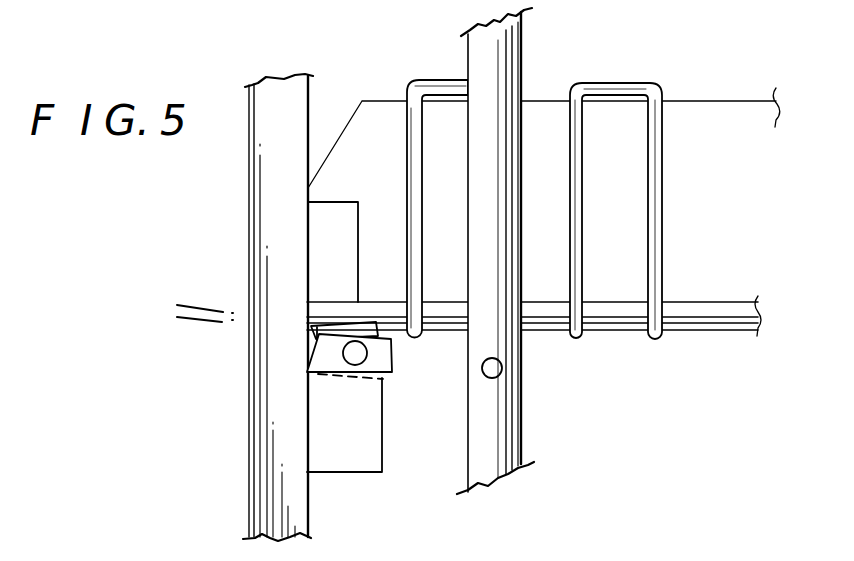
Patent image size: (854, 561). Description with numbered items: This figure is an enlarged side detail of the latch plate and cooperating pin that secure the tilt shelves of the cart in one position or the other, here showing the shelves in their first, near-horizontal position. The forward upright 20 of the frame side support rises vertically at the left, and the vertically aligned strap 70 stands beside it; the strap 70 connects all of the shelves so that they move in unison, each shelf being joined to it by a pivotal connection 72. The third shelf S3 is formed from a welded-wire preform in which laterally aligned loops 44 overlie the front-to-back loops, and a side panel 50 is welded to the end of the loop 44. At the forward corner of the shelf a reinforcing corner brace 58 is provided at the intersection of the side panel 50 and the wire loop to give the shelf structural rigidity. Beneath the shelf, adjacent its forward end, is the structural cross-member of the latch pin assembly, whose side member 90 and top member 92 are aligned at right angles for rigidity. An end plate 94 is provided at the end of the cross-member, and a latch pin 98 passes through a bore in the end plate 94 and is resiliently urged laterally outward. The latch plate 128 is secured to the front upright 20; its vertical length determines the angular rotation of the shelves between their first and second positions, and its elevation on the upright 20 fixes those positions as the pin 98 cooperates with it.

The forward upright 20 is at (271, 192).
The laterally aligned loop 44 is at (452, 82).
The side panel 50 is at (730, 230).
The reinforcing corner brace 58 is at (348, 206).
The vertically aligned strap 70 is at (505, 71).
The pivotal connection 72 is at (503, 375).
The side member 90 is at (311, 341).
The top member 92 is at (367, 333).
The end plate 94 is at (393, 337).
The latch pin 98 is at (365, 365).
The latch plate 128 is at (383, 441).
The third shelf S3 is at (672, 90).